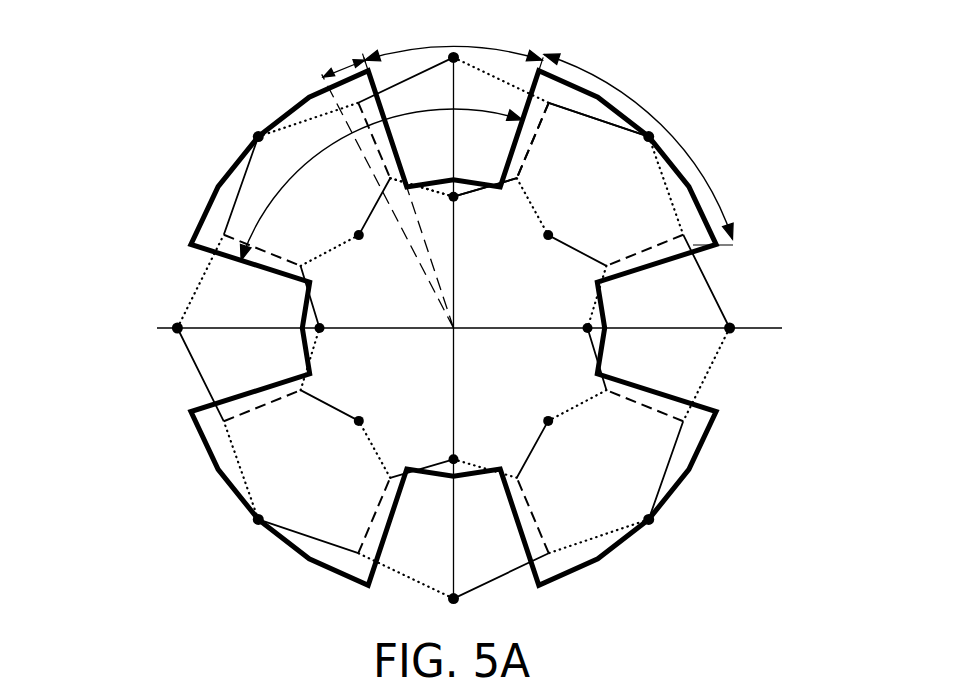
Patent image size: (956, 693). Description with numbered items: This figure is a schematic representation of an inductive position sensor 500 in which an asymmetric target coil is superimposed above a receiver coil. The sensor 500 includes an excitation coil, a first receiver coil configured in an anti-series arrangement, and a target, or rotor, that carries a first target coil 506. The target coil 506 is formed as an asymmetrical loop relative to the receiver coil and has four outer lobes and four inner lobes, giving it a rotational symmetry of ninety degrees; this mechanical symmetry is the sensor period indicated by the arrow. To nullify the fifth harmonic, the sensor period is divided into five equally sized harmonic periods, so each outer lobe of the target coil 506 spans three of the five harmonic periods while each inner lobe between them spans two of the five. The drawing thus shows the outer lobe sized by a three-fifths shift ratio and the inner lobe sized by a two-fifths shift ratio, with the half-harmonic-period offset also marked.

The inductive position sensor 500 is at (752, 165).
The first target coil 506 is at (208, 440).